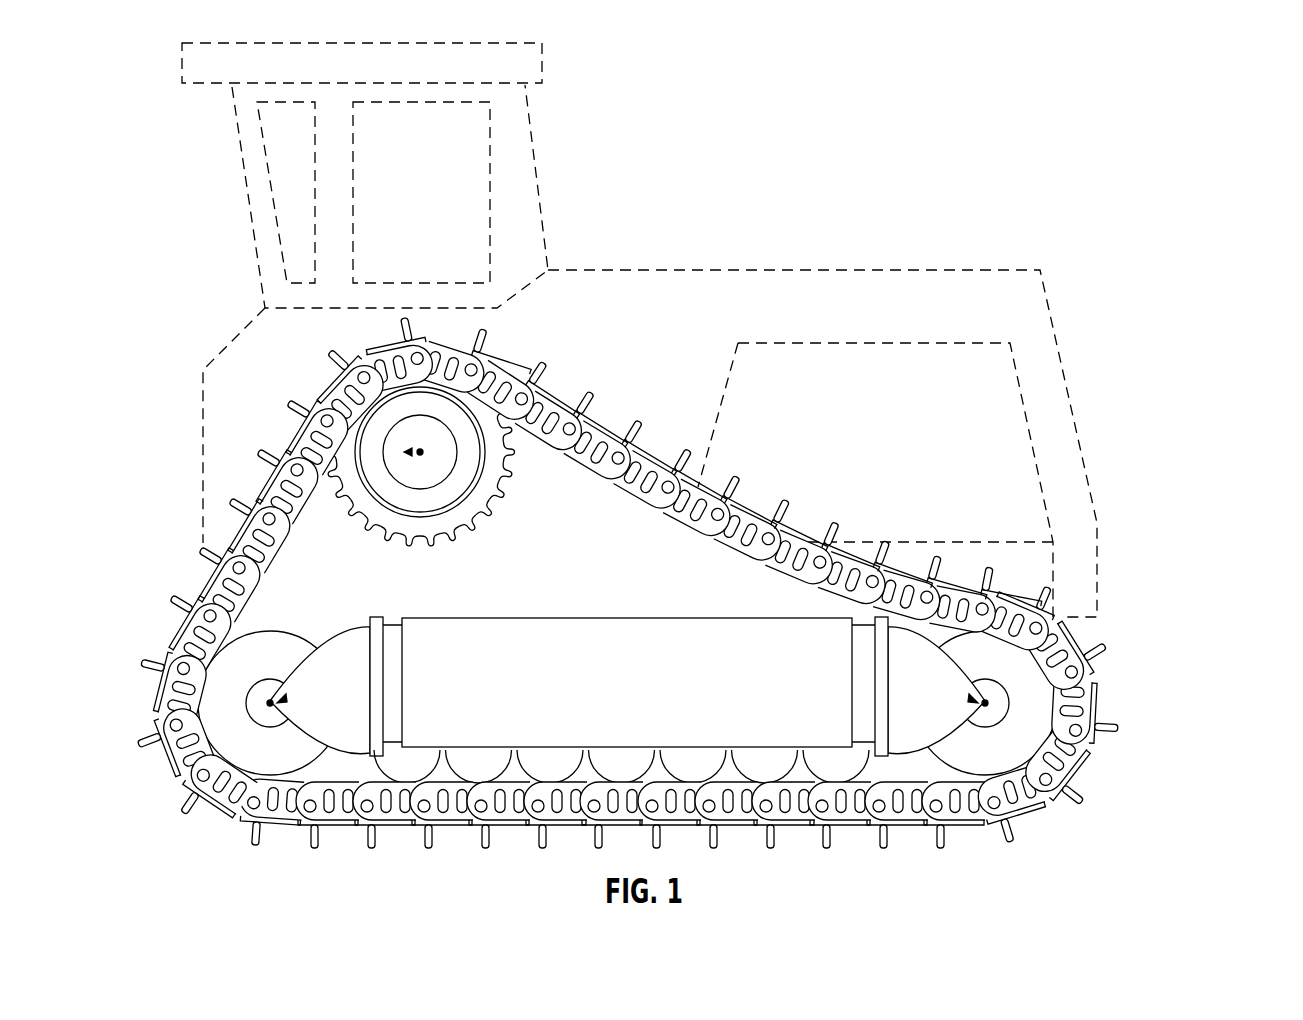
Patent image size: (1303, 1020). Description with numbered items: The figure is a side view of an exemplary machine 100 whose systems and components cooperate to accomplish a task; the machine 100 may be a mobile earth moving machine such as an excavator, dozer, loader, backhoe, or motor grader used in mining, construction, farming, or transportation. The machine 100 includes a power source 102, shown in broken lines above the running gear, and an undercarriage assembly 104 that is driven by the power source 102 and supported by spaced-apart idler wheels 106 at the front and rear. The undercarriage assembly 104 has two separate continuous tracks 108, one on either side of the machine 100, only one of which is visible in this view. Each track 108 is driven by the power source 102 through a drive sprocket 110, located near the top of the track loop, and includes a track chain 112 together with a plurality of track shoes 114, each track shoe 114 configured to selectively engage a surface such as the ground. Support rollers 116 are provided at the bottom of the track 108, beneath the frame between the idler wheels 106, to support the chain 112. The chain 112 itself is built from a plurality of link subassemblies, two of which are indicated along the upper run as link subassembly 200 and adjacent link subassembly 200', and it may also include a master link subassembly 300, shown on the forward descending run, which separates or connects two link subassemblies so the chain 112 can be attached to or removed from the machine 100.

The machine 100 is at (148, 284).
The power source 102 is at (918, 450).
The undercarriage assembly 104 is at (688, 581).
The idler wheels 106 is at (270, 622).
The continuous track 108 is at (1131, 682).
The drive sprocket 110 is at (455, 533).
The track chain 112 is at (1043, 592).
The track shoes 114 is at (603, 430).
The support rollers 116 is at (425, 760).
The link subassembly 200 is at (624, 465).
The link subassembly 200' is at (676, 495).
The master link subassembly 300 is at (288, 527).